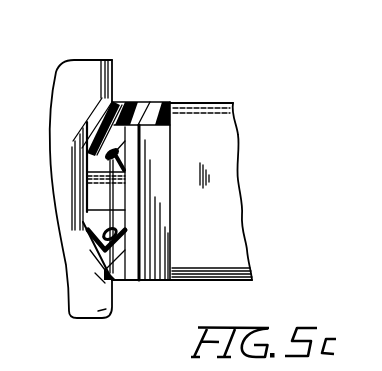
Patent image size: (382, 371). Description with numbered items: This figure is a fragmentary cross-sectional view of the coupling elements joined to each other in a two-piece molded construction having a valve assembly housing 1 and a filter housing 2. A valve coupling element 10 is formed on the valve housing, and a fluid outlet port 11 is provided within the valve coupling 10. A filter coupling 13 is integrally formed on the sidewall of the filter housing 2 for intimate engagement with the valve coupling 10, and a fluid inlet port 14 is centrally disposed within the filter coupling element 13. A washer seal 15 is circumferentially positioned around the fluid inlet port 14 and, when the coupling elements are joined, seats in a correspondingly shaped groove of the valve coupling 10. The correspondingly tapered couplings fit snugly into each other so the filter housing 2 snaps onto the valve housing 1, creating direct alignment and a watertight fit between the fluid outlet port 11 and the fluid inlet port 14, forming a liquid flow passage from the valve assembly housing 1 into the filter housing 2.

The valve assembly housing 1 is at (230, 125).
The filter housing 2 is at (88, 72).
The valve coupling element 10 is at (128, 104).
The fluid outlet port 11 is at (110, 197).
The filter coupling 13 is at (155, 150).
The fluid inlet port 14 is at (98, 194).
The washer seal 15 is at (120, 231).